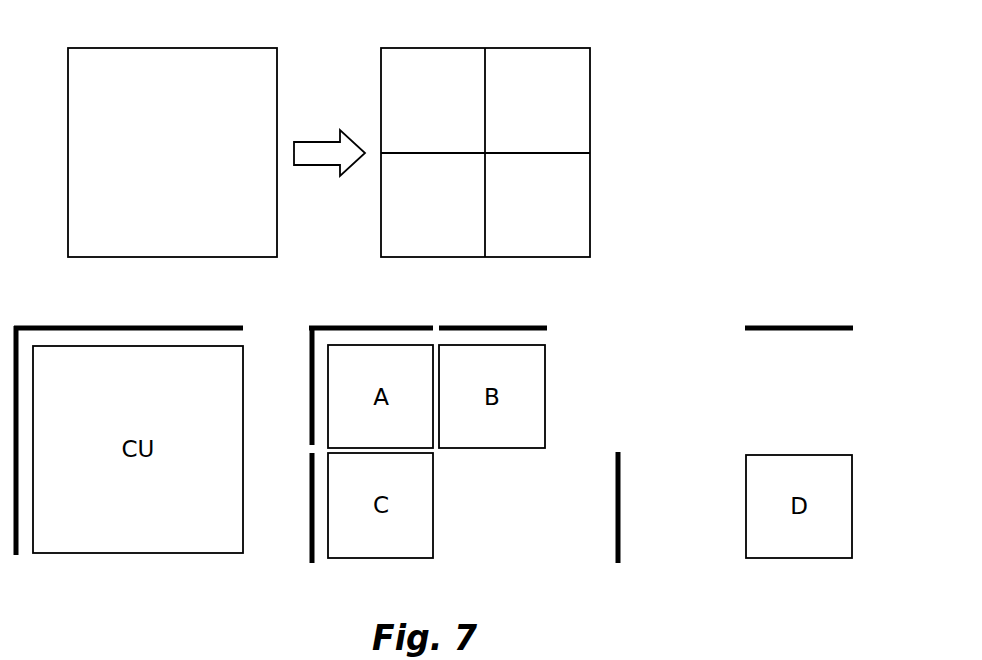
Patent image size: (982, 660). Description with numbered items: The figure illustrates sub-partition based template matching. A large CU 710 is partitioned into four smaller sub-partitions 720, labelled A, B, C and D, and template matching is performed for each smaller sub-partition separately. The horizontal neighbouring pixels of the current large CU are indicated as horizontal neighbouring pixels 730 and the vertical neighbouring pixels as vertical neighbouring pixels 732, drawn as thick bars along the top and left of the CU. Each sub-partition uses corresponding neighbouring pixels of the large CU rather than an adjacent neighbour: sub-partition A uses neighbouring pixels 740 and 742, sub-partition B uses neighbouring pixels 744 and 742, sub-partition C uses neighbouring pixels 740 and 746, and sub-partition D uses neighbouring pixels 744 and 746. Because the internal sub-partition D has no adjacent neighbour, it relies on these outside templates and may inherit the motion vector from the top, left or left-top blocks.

The CU 710 is at (185, 48).
The sub-partitions 720 is at (636, 78).
The horizontal neighbouring pixels 730 is at (145, 328).
The vertical neighbouring pixels 732 is at (18, 546).
The neighbouring pixels 740 is at (397, 328).
The neighbouring pixels 742 is at (312, 357).
The neighbouring pixels 744 is at (493, 328).
The neighbouring pixels 746 is at (311, 540).